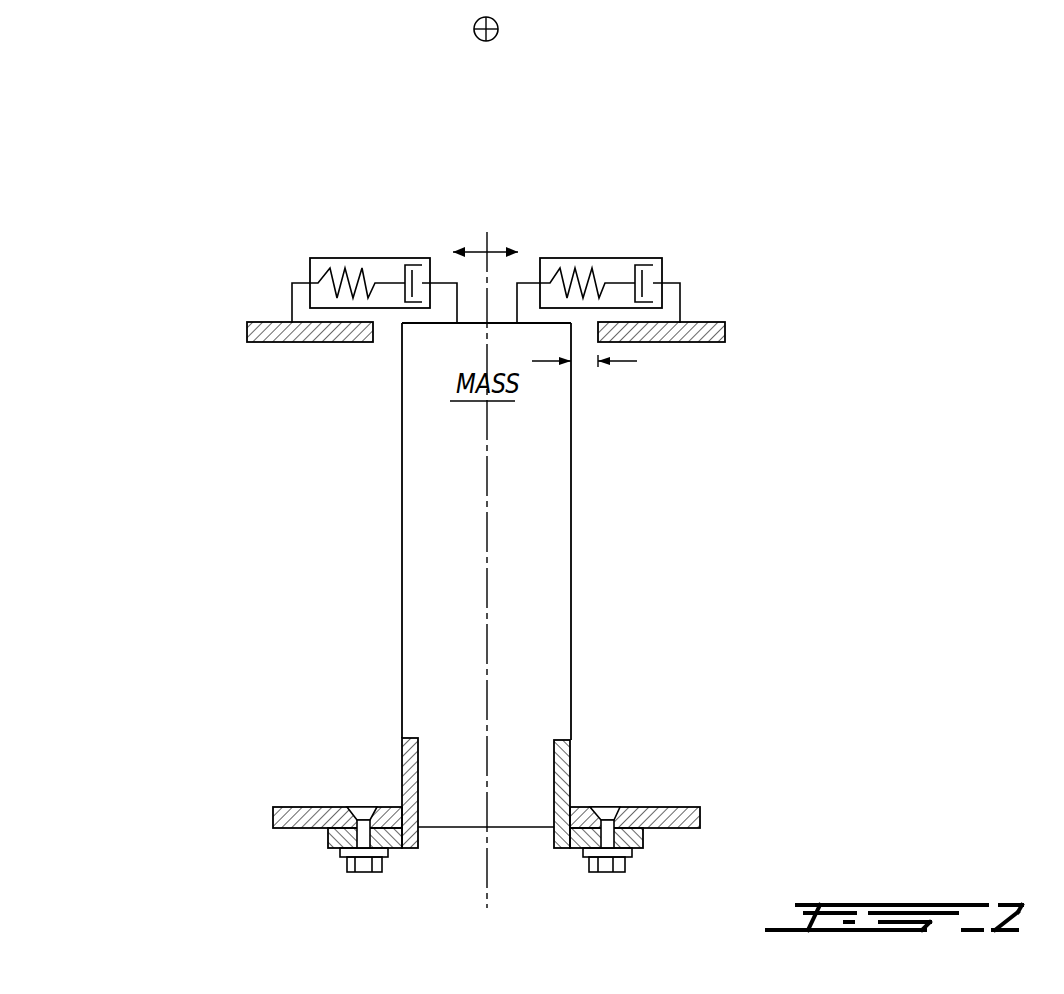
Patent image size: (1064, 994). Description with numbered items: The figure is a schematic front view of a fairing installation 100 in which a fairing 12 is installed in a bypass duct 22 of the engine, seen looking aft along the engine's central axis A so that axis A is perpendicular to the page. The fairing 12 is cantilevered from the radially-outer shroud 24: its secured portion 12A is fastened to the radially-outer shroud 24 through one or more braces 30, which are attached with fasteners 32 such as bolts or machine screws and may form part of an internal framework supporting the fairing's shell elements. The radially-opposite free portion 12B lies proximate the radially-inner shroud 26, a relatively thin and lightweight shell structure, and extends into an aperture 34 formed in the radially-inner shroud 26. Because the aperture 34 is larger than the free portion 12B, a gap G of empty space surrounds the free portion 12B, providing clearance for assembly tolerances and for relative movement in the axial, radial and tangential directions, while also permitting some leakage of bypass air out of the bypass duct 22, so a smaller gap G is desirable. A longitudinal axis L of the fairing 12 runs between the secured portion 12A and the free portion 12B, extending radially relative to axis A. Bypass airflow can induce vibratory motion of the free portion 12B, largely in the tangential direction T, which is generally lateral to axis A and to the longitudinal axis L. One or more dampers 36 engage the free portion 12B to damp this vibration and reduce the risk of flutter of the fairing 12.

The fairing installation 100 is at (172, 212).
The fairing 12 is at (430, 553).
The secured portion 12A is at (390, 790).
The free portion 12B is at (395, 355).
The bypass duct 22 is at (678, 572).
The radially-outer shroud 24 is at (280, 812).
The radially-inner shroud 26 is at (263, 328).
The braces 30 is at (418, 798).
The fasteners 32 is at (355, 838).
The aperture 34 is at (387, 333).
The damper 36 is at (373, 258).
The axis A is at (498, 29).
The tangential direction T is at (493, 250).
The gap G is at (585, 360).
The longitudinal axis L is at (487, 527).